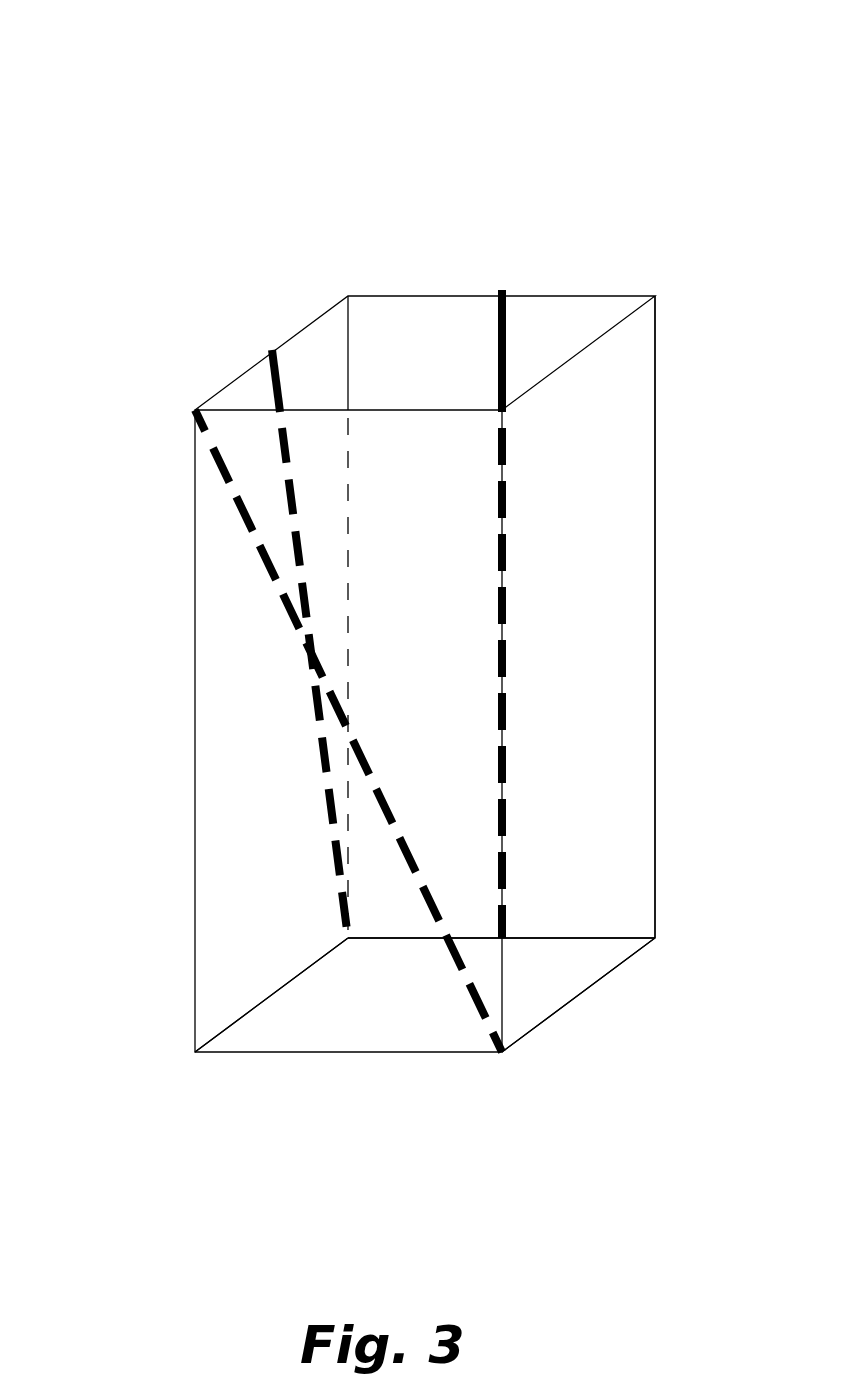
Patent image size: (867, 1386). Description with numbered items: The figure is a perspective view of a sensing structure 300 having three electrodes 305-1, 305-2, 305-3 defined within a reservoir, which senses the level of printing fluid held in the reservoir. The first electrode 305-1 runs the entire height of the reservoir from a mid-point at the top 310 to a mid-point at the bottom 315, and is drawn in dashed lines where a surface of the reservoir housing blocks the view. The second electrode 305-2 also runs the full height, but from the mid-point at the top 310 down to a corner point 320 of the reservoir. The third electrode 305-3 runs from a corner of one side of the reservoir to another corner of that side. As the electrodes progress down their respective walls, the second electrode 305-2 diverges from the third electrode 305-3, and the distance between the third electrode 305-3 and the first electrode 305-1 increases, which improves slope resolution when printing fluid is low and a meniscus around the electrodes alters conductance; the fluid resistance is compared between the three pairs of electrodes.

The sensing structure 300 is at (222, 76).
The top of the reservoir 310 is at (390, 297).
The bottom of the reservoir 315 is at (575, 980).
The corner point of the reservoir 320 is at (348, 938).
The first electrode 305-1 is at (508, 276).
The second electrode 305-2 is at (258, 338).
The third electrode 305-3 is at (185, 393).